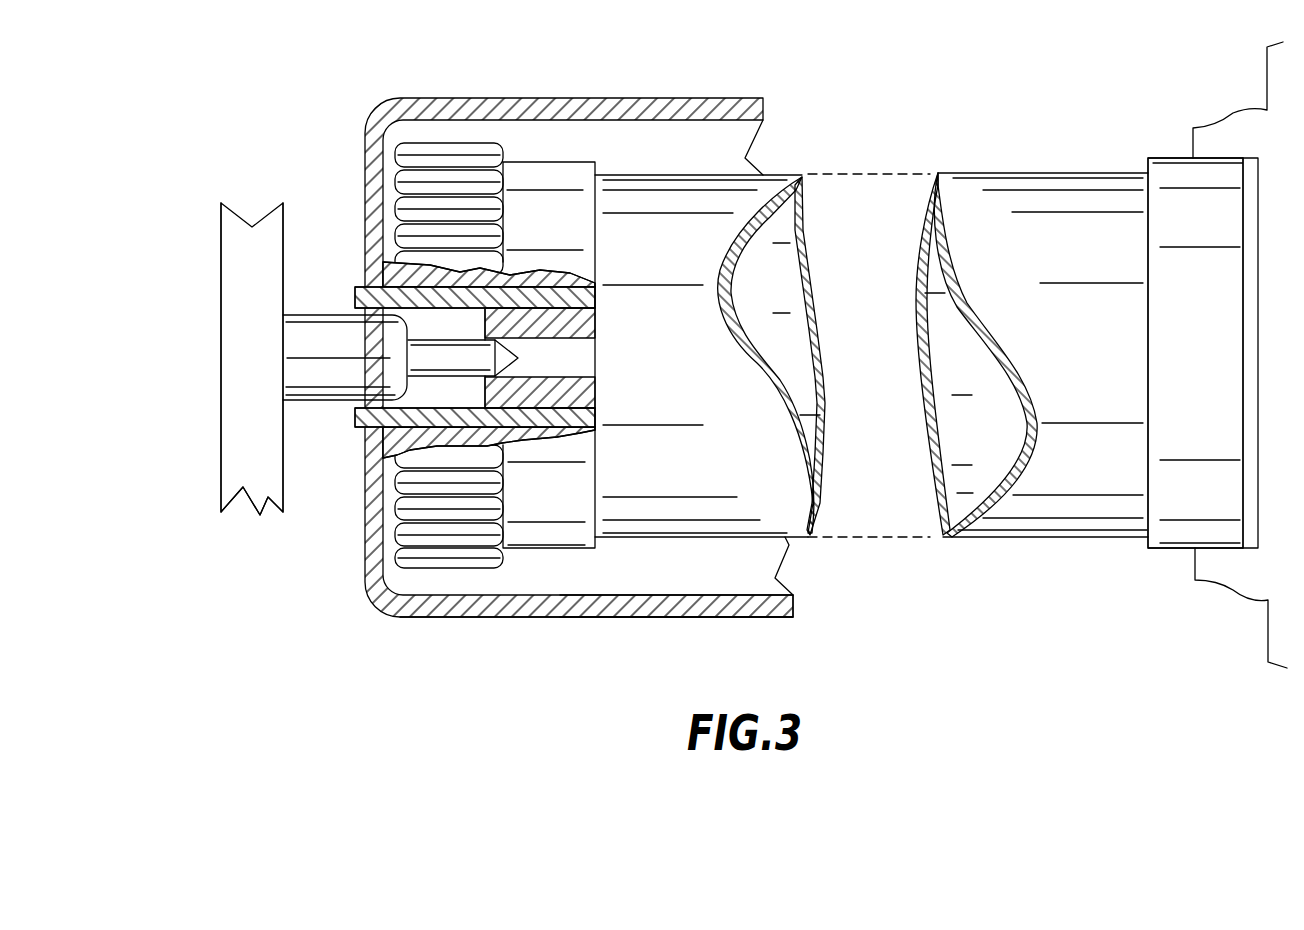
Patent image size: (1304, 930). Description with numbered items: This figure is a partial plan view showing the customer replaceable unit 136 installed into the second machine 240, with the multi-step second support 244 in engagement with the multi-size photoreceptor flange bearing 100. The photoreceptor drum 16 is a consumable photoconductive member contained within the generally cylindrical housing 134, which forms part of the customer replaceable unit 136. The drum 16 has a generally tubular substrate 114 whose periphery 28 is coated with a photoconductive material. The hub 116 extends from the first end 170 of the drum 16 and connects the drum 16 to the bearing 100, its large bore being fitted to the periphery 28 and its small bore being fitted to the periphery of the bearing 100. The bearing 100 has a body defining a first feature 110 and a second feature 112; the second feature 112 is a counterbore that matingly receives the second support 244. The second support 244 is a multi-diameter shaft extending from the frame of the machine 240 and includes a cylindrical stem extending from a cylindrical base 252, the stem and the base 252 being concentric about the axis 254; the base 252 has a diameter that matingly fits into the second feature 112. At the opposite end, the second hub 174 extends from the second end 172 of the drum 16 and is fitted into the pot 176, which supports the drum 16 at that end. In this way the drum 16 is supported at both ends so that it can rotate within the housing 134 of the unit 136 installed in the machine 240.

The photoreceptor drum 16 is at (990, 167).
The periphery 28 is at (796, 176).
The multi-size photoreceptor flange bearing 100 is at (356, 292).
The first feature 110 is at (560, 333).
The second feature 112 is at (400, 287).
The substrate 114 is at (803, 193).
The hub 116 is at (513, 138).
The housing 134 is at (760, 619).
The customer replaceable unit 136 is at (512, 632).
The first end 170 is at (600, 537).
The second end 172 is at (1148, 549).
The second hub 174 is at (1182, 157).
The pot 176 is at (1232, 113).
The machine 240 is at (222, 168).
The second support 244 is at (296, 425).
The cylindrical base 252 is at (304, 314).
The axis 254 is at (477, 363).